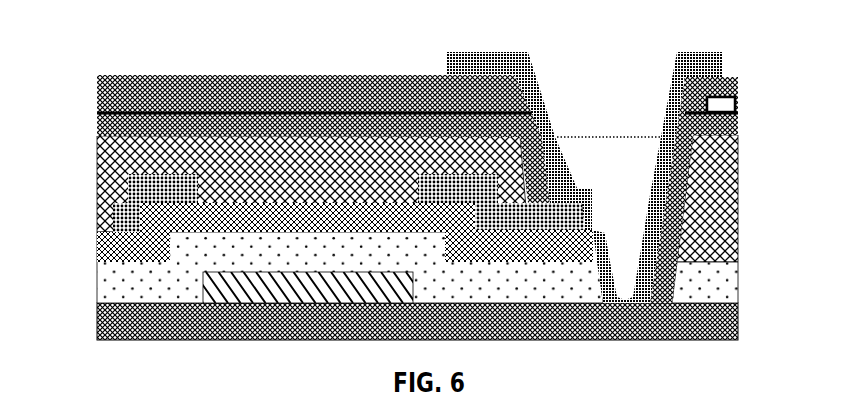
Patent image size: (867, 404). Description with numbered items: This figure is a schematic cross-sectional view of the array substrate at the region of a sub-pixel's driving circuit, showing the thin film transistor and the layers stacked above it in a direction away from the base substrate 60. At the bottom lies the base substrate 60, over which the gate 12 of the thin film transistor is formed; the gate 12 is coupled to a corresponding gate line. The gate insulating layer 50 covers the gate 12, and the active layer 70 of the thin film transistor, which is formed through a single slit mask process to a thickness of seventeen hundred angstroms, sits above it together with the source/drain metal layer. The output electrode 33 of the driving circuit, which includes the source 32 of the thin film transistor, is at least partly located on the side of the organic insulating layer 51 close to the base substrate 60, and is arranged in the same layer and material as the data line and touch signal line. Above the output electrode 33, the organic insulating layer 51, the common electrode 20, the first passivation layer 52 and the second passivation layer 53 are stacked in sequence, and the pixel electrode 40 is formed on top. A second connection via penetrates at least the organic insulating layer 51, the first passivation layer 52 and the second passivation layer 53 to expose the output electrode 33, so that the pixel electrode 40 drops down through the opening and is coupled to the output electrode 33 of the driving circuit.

The gate 12 is at (203, 293).
The common electrode 20 is at (737, 98).
The source 32 is at (125, 182).
The output electrode 33 is at (503, 52).
The pixel electrode 40 is at (724, 62).
The gate insulating layer 50 is at (723, 285).
The organic insulating layer 51 is at (738, 173).
The first passivation layer 52 is at (97, 118).
The second passivation layer 53 is at (97, 82).
The base substrate 60 is at (738, 329).
The active layer 70 is at (97, 247).